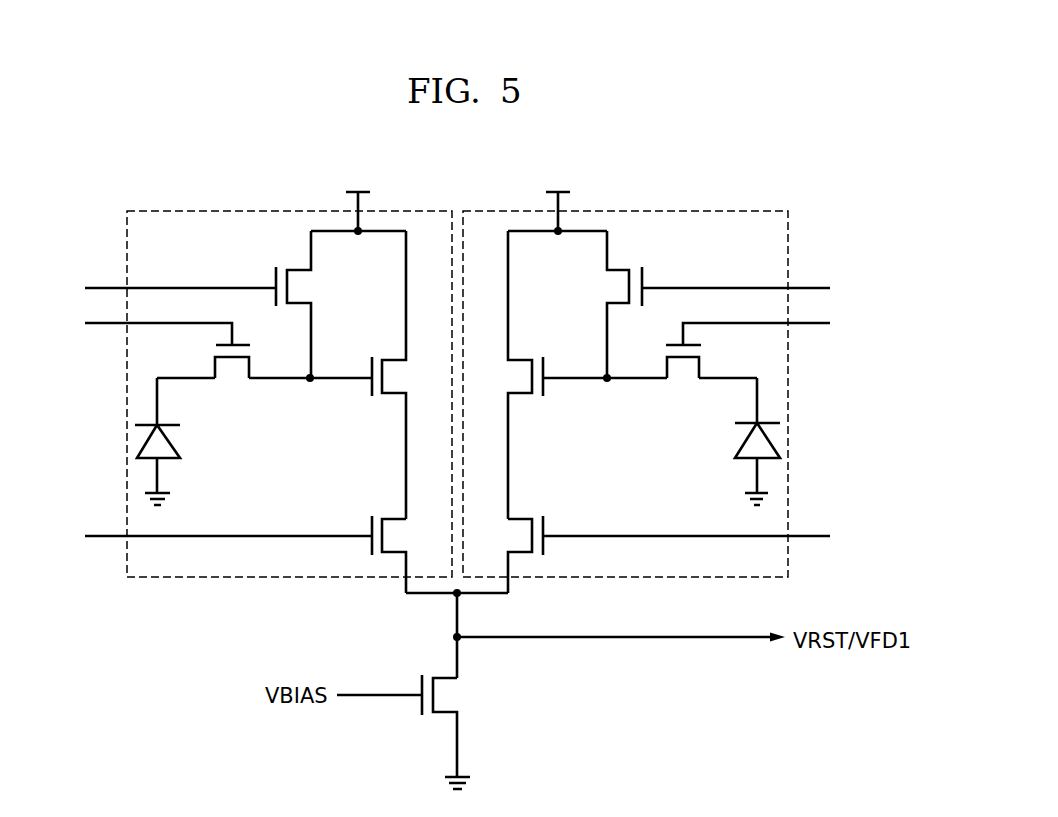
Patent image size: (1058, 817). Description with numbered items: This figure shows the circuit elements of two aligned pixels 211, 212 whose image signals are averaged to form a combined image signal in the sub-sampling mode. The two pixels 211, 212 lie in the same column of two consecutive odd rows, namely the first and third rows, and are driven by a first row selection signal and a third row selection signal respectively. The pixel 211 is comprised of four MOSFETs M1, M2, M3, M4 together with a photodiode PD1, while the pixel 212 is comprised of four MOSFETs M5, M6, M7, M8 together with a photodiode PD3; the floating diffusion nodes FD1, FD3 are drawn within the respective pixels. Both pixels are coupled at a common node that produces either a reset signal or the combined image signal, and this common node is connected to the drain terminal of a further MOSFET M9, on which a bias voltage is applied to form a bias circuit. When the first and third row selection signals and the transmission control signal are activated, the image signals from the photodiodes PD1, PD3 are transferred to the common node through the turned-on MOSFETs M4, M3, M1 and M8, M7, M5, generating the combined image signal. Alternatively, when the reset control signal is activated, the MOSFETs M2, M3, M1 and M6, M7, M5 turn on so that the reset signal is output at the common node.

The pixel 211 is at (233, 205).
The pixel 212 is at (633, 205).
The MOSFET M1 is at (405, 554).
The MOSFET M2 is at (310, 304).
The MOSFET M3 is at (405, 375).
The MOSFET M4 is at (167, 364).
The MOSFET M5 is at (511, 554).
The MOSFET M6 is at (610, 304).
The MOSFET M7 is at (511, 375).
The MOSFET M8 is at (748, 364).
The MOSFET M9 is at (413, 732).
The photodiode PD1 is at (184, 441).
The photodiode PD3 is at (733, 441).
The floating diffusion node FD1 is at (310, 392).
The floating diffusion node FD3 is at (605, 392).